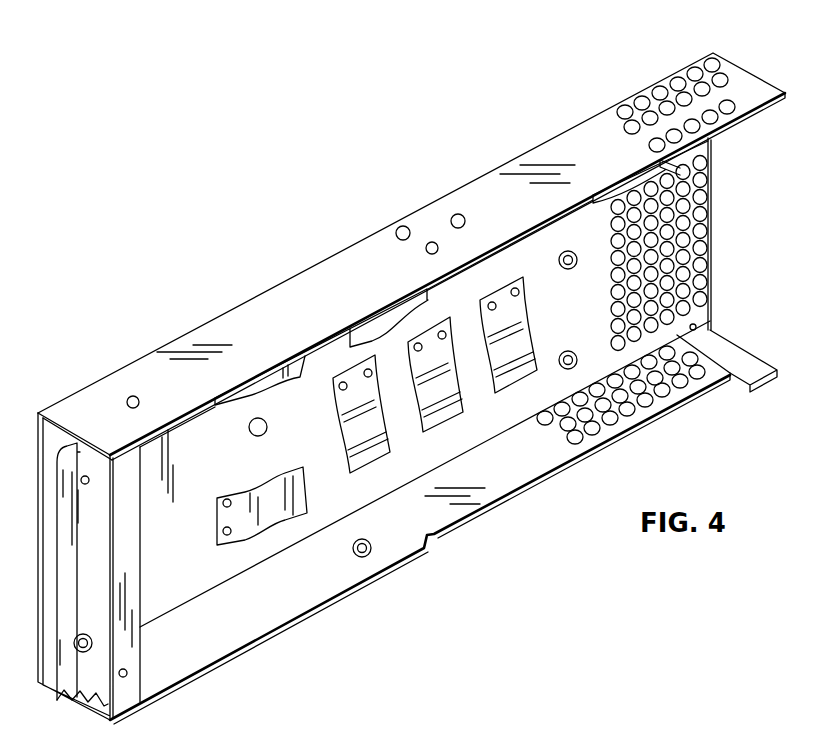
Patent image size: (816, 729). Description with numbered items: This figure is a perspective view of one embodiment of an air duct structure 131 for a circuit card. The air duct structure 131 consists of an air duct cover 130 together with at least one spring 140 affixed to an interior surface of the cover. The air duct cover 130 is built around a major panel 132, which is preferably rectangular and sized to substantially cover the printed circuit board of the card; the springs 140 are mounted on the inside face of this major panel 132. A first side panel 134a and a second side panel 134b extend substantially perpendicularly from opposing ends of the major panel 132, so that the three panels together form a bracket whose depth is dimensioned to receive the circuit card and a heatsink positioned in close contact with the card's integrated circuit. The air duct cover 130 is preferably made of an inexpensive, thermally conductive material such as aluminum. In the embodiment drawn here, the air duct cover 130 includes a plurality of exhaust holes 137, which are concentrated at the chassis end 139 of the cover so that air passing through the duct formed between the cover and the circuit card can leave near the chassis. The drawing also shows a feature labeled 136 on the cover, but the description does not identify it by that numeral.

The air duct cover 130 is at (432, 201).
The air duct structure 131 is at (289, 228).
The major panel 132 is at (226, 454).
The first side panel 134a is at (272, 590).
The second side panel 134b is at (312, 329).
The mounting hole 136 is at (576, 257).
The exhaust holes 137 is at (746, 84).
The chassis end 139 is at (712, 203).
The spring 140 is at (383, 468).